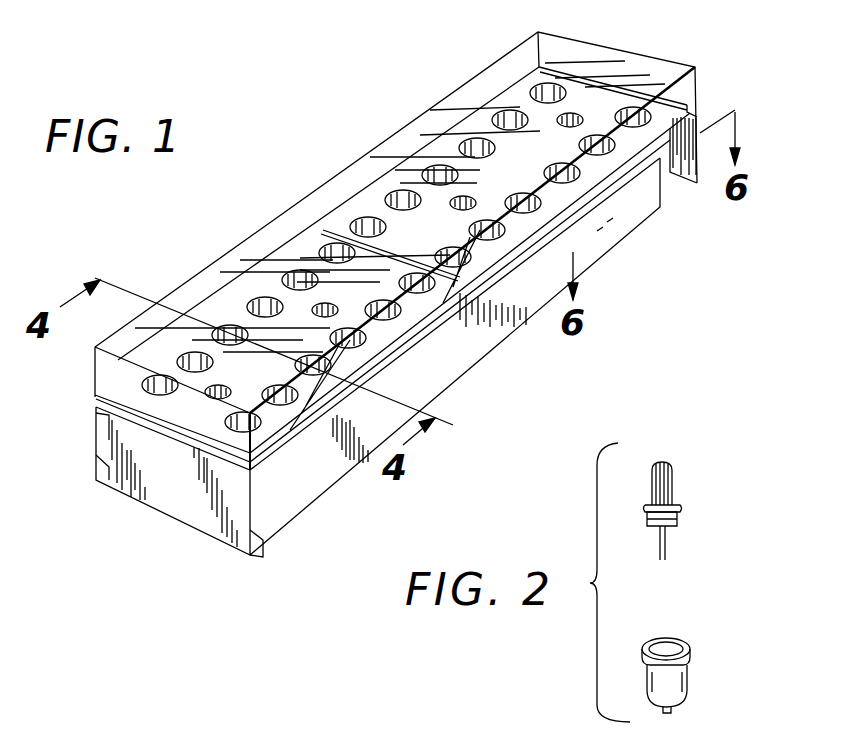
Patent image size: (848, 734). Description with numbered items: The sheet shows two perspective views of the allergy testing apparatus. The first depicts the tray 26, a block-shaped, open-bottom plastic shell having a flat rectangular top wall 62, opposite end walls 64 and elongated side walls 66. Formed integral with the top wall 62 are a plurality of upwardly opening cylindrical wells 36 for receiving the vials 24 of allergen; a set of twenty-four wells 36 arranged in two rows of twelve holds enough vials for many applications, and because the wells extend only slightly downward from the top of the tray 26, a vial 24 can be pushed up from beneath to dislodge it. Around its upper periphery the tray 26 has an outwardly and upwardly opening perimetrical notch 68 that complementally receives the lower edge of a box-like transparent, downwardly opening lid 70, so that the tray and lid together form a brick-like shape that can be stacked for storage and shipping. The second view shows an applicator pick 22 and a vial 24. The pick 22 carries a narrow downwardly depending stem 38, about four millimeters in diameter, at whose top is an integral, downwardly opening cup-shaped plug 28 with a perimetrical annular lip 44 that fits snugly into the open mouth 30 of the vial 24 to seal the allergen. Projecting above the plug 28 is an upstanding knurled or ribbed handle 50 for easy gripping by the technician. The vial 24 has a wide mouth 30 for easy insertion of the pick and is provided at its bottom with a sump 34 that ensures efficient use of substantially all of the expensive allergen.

In FIG. 1, the tray 26 is at (432, 285).
In FIG. 1, the cylindrical wells 36 is at (503, 120).
In FIG. 1, the top wall 62 is at (288, 306).
In FIG. 1, the end walls 64 is at (165, 497).
In FIG. 1, the side walls 66 is at (667, 181).
In FIG. 1, the perimetrical notch 68 is at (697, 115).
In FIG. 1, the lid 70 is at (597, 46).
In FIG. 2, the applicator pick 22 is at (684, 496).
In FIG. 2, the handle 50 is at (675, 470).
In FIG. 2, the annular lip 44 is at (648, 509).
In FIG. 2, the plug 28 is at (680, 519).
In FIG. 2, the stem 38 is at (667, 545).
In FIG. 2, the vial 24 is at (703, 663).
In FIG. 2, the mouth 30 is at (671, 643).
In FIG. 2, the sump 34 is at (673, 712).